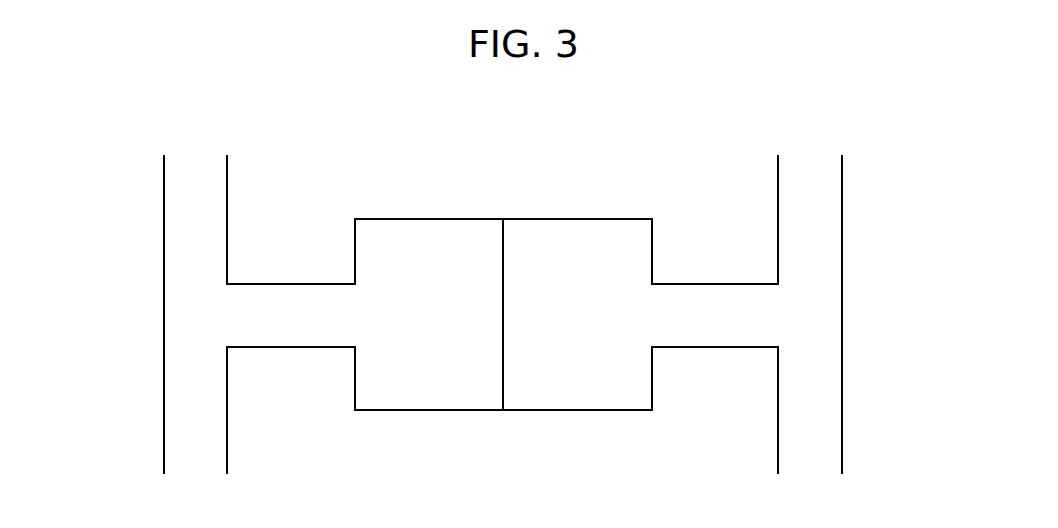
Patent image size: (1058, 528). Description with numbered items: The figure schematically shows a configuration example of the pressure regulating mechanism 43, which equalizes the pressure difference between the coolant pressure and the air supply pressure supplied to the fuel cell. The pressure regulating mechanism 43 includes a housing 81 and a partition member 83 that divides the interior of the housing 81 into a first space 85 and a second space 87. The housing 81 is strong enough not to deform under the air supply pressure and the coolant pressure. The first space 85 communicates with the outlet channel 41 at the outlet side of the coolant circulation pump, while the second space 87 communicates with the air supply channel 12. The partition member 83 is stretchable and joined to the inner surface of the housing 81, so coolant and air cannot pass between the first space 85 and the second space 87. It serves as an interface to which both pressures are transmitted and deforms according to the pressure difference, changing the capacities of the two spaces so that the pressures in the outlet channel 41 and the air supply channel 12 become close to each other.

The air supply channel 12 is at (173, 252).
The outlet channel 41 is at (823, 252).
The housing 81 is at (625, 218).
The partition member 83 is at (501, 248).
The first space 85 is at (569, 240).
The second space 87 is at (413, 240).
The pressure regulating mechanism 43 is at (631, 473).